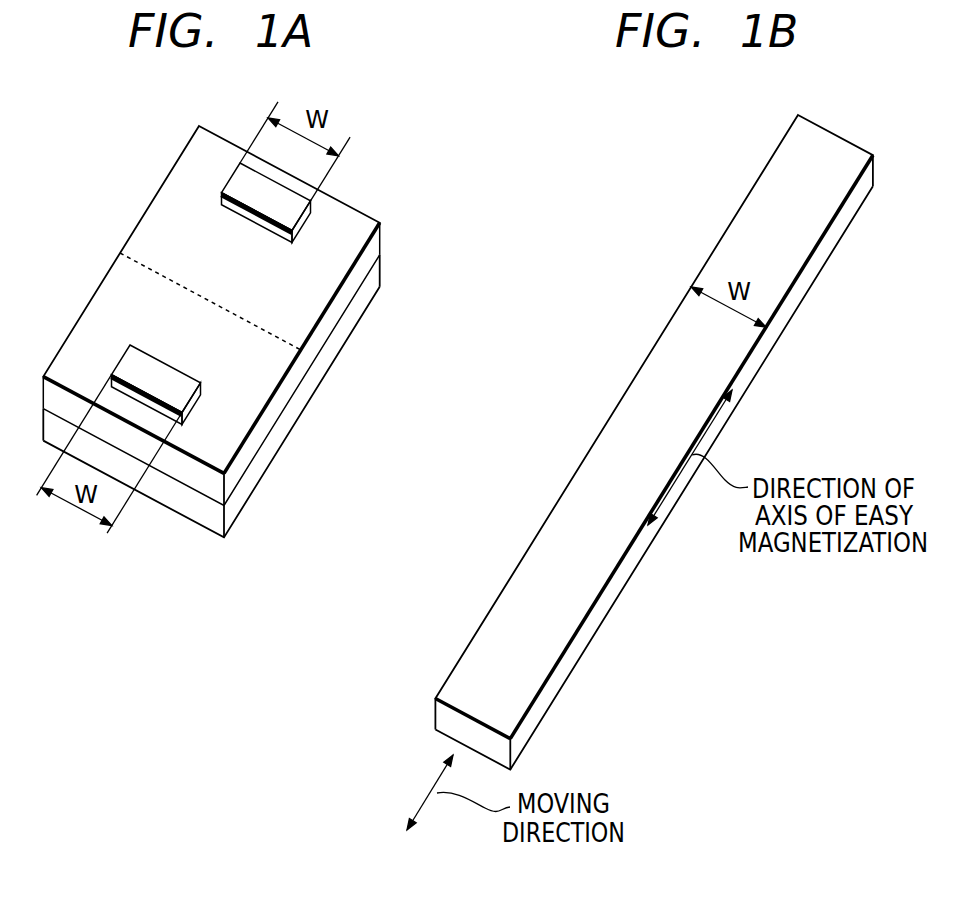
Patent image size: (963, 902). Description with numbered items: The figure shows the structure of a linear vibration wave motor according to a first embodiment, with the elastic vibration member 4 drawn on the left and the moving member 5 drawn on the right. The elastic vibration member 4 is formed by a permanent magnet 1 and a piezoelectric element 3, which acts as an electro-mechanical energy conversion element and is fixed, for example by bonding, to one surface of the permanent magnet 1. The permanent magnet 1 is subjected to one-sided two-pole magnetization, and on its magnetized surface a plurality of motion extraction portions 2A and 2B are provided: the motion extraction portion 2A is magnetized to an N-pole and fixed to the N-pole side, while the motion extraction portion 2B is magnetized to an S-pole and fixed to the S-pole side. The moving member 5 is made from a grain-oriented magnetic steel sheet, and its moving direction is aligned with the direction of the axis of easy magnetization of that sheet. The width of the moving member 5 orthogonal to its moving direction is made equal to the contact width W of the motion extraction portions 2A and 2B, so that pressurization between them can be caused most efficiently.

In FIG. 1A, the permanent magnet 1 is at (365, 263).
In FIG. 1A, the piezoelectric element 3 is at (458, 235).
In FIG. 1A, the elastic vibration member 4 is at (266, 331).
In FIG. 1A, the motion extraction portion 2A is at (307, 205).
In FIG. 1A, the motion extraction portion 2B is at (200, 385).
In FIG. 1B, the moving member 5 is at (547, 642).